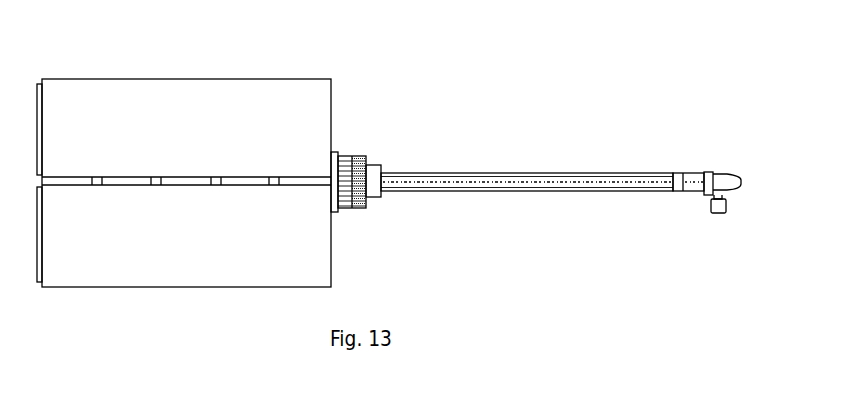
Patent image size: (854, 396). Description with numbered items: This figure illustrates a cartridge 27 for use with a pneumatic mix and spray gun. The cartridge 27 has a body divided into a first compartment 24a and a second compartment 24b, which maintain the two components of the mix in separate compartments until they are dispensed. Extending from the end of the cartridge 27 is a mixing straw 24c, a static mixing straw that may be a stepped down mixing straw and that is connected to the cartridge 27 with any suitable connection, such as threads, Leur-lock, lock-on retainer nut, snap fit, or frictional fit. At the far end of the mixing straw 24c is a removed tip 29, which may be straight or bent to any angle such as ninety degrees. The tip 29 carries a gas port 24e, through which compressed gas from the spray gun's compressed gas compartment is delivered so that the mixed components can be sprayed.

The cartridge 27 is at (227, 150).
The first compartment 24a is at (184, 130).
The second compartment 24b is at (184, 229).
The mixing straw 24c is at (506, 161).
The gas port 24e is at (703, 196).
The tip 29 is at (708, 166).